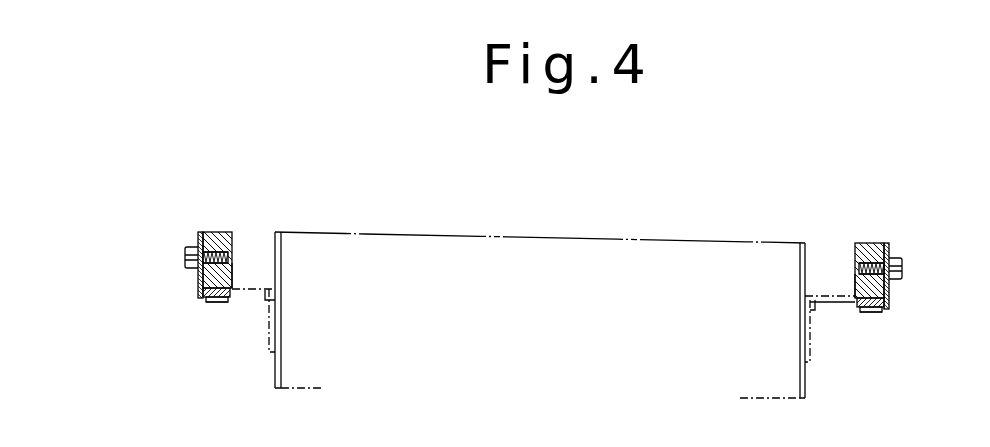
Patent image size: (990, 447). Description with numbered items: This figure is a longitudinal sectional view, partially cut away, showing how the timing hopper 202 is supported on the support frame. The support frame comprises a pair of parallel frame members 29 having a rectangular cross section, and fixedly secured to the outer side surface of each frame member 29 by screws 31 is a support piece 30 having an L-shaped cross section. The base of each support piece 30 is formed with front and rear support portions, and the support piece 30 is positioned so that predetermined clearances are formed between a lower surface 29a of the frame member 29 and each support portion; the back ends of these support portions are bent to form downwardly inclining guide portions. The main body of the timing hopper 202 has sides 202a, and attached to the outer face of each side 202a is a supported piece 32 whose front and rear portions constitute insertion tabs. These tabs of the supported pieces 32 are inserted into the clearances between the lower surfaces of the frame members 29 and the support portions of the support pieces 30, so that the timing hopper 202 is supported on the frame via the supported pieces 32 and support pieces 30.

The timing hopper 202 is at (566, 236).
The side of timing hopper main body 202a is at (273, 370).
The frame member 29 is at (218, 232).
The lower surface of frame member 29a is at (229, 277).
The support piece 30 is at (198, 274).
The screw 31 is at (185, 258).
The supported piece 32 is at (283, 267).